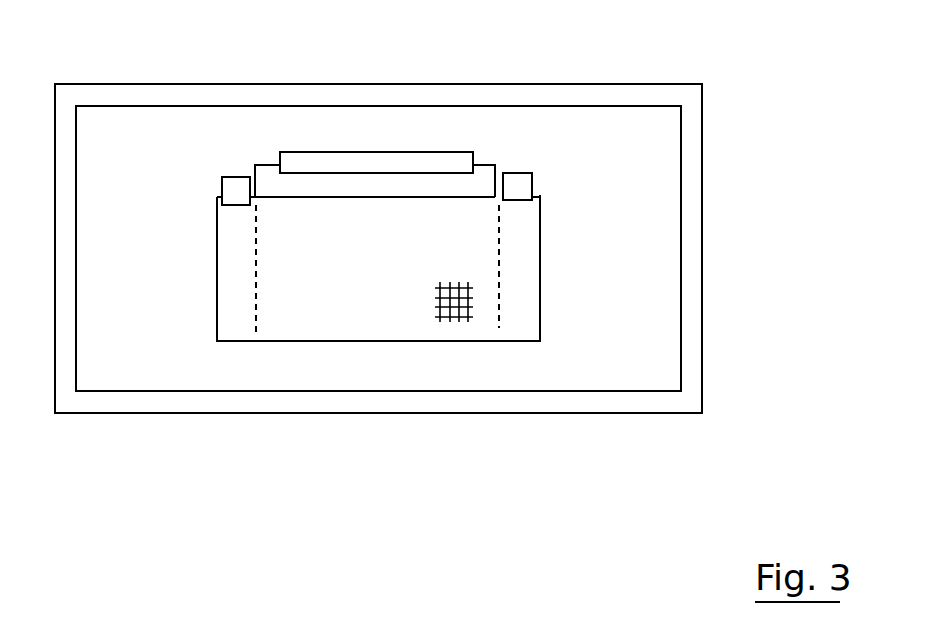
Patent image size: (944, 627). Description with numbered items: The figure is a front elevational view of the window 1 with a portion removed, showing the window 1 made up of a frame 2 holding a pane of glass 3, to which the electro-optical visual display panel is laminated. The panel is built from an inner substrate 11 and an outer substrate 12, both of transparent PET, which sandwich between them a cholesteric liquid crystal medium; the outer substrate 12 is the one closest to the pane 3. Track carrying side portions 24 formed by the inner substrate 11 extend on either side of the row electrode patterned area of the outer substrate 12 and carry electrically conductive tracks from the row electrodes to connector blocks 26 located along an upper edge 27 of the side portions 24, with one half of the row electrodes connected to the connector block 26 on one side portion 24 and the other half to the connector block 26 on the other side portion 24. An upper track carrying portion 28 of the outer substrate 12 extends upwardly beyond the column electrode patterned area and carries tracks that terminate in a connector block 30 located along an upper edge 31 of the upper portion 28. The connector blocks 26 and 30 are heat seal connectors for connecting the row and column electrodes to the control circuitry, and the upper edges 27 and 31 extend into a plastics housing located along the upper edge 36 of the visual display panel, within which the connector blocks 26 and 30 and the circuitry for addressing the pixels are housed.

The window 1 is at (681, 47).
The frame 2 is at (693, 369).
The pane of glass 3 is at (655, 252).
The inner substrate 11 is at (375, 315).
The outer substrate 12 is at (499, 302).
The track carrying side portions 24 is at (238, 297).
The connector blocks 26 is at (225, 180).
The upper edge 27 is at (217, 195).
The upper track carrying portion 28 is at (493, 163).
The connector block 30 is at (333, 158).
The upper edge 31 is at (487, 163).
The upper edge 36 is at (247, 165).